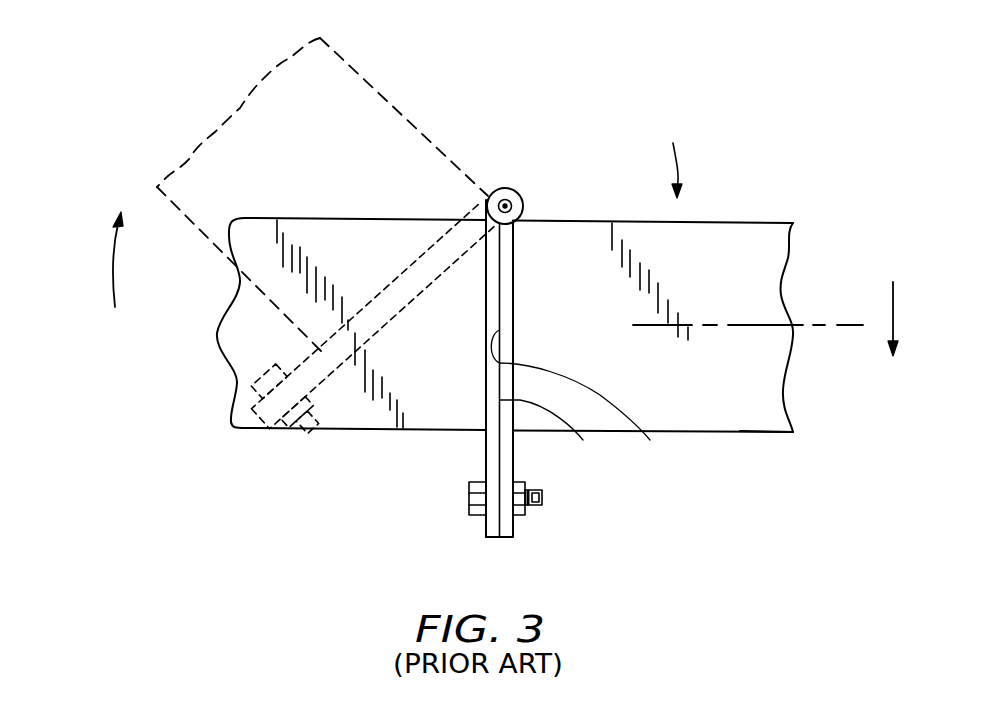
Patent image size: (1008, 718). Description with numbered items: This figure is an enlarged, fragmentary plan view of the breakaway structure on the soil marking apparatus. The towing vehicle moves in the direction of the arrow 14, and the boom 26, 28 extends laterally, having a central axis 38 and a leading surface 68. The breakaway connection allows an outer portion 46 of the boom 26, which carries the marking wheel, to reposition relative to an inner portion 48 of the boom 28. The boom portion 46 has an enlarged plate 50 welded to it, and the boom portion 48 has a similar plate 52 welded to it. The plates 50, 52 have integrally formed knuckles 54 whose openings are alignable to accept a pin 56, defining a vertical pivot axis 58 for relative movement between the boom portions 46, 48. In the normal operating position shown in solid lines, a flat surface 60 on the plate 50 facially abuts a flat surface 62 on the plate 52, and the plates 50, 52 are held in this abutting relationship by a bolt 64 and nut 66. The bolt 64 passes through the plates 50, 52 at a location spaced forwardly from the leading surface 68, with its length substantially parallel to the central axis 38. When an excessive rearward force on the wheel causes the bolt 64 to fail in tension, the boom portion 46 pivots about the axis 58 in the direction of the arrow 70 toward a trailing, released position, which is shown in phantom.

The arrow 14 is at (893, 310).
The boom 26 is at (669, 156).
The boom 28 is at (720, 250).
The central axis 38 is at (820, 323).
The outer portion 46 is at (318, 154).
The inner portion 48 is at (672, 366).
The plate 50 is at (485, 445).
The plate 52 is at (515, 275).
The knuckles 54 is at (507, 199).
The pin 56 is at (512, 200).
The vertical pivot axis 58 is at (492, 192).
The flat surface 60 is at (583, 440).
The flat surface 62 is at (650, 440).
The bolt 64 is at (470, 514).
The nut 66 is at (527, 516).
The leading surface 68 is at (783, 436).
The arrow 70 is at (110, 268).